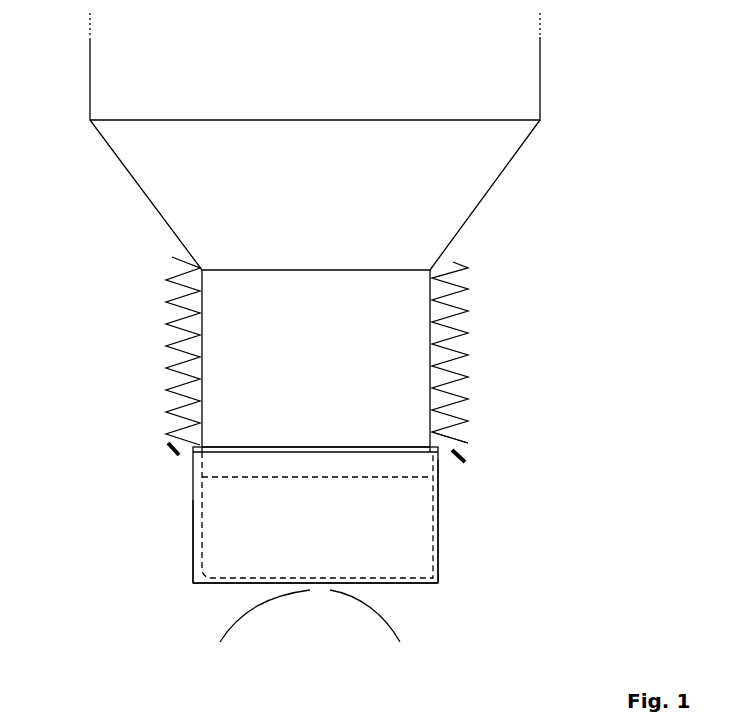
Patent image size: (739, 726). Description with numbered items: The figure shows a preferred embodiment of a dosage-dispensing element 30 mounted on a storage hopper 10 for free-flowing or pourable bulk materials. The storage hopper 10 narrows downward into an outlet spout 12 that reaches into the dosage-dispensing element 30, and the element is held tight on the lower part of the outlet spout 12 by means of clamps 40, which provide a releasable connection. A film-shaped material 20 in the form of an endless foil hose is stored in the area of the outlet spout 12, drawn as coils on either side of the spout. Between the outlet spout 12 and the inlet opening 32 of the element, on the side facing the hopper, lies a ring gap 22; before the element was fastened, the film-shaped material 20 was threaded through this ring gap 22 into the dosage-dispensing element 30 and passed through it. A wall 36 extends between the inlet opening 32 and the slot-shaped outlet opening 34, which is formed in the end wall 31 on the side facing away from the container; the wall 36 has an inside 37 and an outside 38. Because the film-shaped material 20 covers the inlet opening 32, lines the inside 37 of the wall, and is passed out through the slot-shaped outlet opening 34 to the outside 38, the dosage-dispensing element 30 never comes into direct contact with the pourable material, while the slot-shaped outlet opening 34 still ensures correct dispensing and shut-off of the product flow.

The storage hopper 10 is at (540, 107).
The outlet spout 12 is at (200, 350).
The film-shaped material 20 is at (468, 325).
The ring gap 22 is at (450, 445).
The dosage-dispensing element 30 is at (193, 505).
The end wall 31 is at (218, 584).
The inlet opening 32 is at (332, 447).
The slot-shaped outlet opening 34 is at (316, 588).
The wall 36 is at (438, 583).
The inside of the wall 37 is at (200, 583).
The outside of the wall 38 is at (438, 537).
The clamps 40 is at (168, 443).